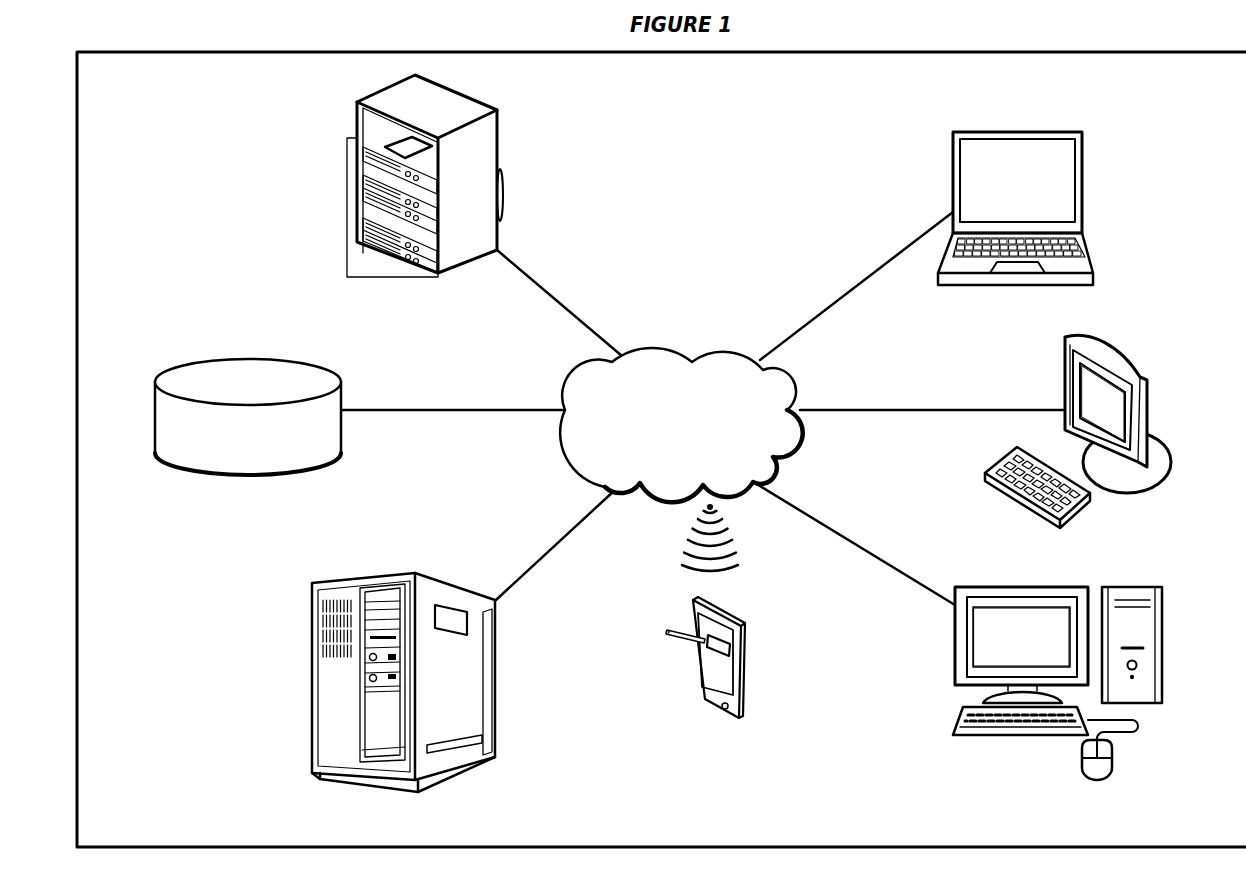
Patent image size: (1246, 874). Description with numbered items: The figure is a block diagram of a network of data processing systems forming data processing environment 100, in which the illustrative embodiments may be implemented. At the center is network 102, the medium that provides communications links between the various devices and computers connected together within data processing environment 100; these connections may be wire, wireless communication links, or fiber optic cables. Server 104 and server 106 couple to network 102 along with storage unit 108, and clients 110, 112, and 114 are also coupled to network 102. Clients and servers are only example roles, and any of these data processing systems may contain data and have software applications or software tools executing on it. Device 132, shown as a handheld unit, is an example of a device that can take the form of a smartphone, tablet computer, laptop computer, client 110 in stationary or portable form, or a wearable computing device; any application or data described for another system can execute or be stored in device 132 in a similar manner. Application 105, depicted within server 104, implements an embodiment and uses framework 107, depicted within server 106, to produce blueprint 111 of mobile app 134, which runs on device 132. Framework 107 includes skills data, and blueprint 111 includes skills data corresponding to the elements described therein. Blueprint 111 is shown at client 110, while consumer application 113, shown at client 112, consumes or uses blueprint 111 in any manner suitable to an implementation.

The data processing environment 100 is at (122, 88).
The network 102 is at (695, 443).
The server 104 is at (450, 299).
The application 105 is at (432, 148).
The server 106 is at (445, 816).
The framework 107 is at (468, 632).
The storage unit 108 is at (262, 455).
The client 110 is at (1195, 513).
The blueprint 111 is at (1081, 384).
The client 112 is at (1067, 760).
The consumer application 113 is at (1018, 600).
The client 114 is at (1065, 190).
The device 132 is at (762, 753).
The mobile app 134 is at (778, 647).